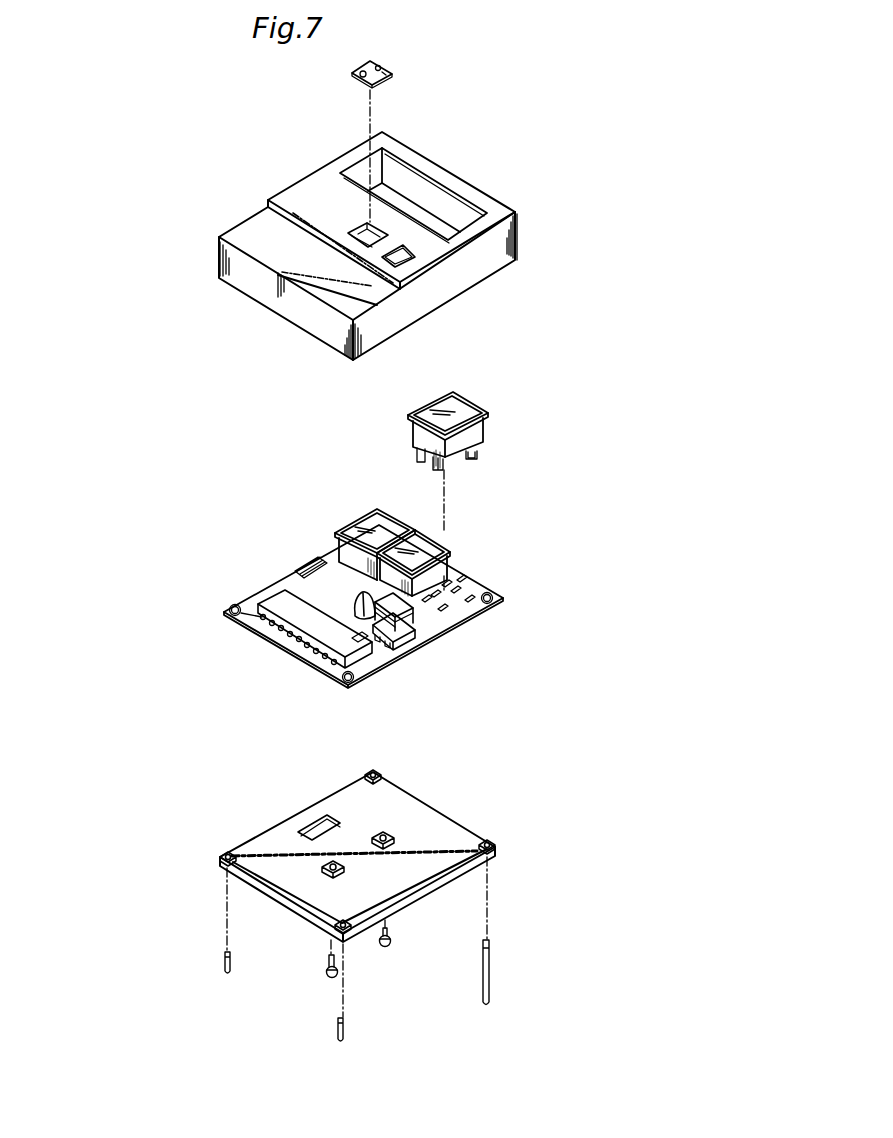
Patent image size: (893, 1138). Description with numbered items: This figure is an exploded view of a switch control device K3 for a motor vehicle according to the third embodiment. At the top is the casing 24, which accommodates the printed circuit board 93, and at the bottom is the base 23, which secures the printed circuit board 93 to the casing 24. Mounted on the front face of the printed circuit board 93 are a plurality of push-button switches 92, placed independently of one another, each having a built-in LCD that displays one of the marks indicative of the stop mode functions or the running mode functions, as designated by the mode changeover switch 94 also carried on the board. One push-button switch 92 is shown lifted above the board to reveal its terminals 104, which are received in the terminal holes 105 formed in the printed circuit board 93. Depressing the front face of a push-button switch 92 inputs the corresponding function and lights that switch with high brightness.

The switch control device K3 is at (178, 573).
The casing 24 is at (425, 167).
The push-button switches 92 is at (462, 412).
The terminals 104 is at (460, 457).
The printed circuit board 93 is at (467, 580).
The mode changeover switch 94 is at (413, 612).
The terminal holes 105 is at (467, 607).
The base 23 is at (437, 823).